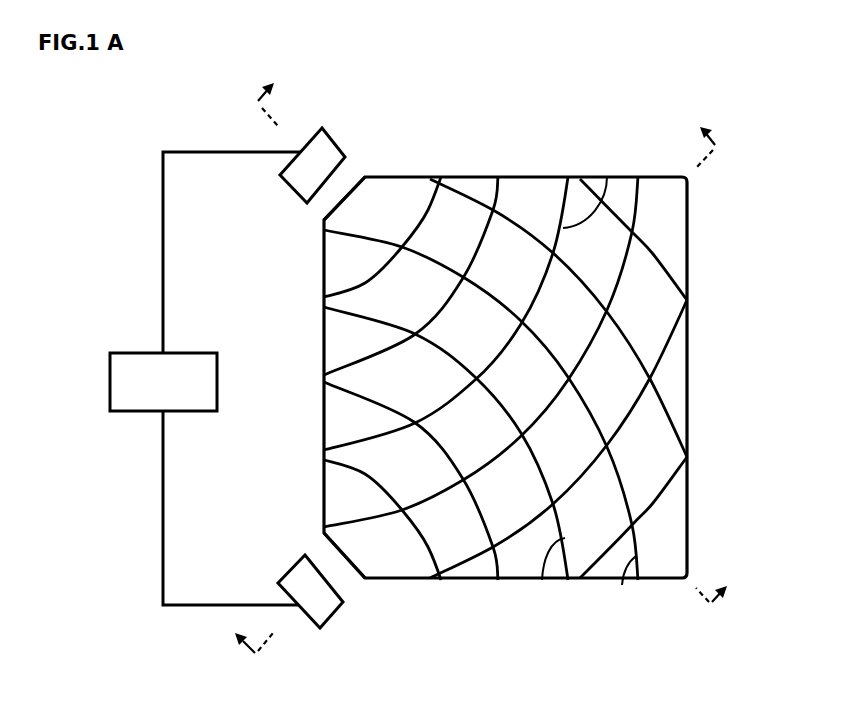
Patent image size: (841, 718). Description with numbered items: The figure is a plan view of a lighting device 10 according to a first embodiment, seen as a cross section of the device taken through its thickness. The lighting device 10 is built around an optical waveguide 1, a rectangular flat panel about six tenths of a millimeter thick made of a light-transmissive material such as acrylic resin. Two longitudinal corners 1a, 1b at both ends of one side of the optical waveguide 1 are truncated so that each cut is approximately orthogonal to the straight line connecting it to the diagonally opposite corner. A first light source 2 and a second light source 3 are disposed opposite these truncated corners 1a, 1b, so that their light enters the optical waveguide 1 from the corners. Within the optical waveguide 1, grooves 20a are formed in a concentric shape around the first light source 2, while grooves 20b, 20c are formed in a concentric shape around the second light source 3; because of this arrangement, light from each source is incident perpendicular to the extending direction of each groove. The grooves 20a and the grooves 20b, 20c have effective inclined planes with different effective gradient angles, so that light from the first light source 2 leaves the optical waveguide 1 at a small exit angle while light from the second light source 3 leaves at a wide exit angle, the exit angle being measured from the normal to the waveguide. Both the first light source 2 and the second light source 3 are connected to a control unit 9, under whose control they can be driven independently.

The lighting device 10 is at (515, 86).
The optical waveguide 1 is at (525, 177).
The longitudinal corner 1a is at (346, 212).
The longitudinal corner 1b is at (346, 547).
The first light source 2 is at (335, 142).
The second light source 3 is at (332, 615).
The control unit 9 is at (217, 379).
The grooves 20a is at (607, 177).
The grooves 20b is at (542, 580).
The grooves 20c is at (622, 585).